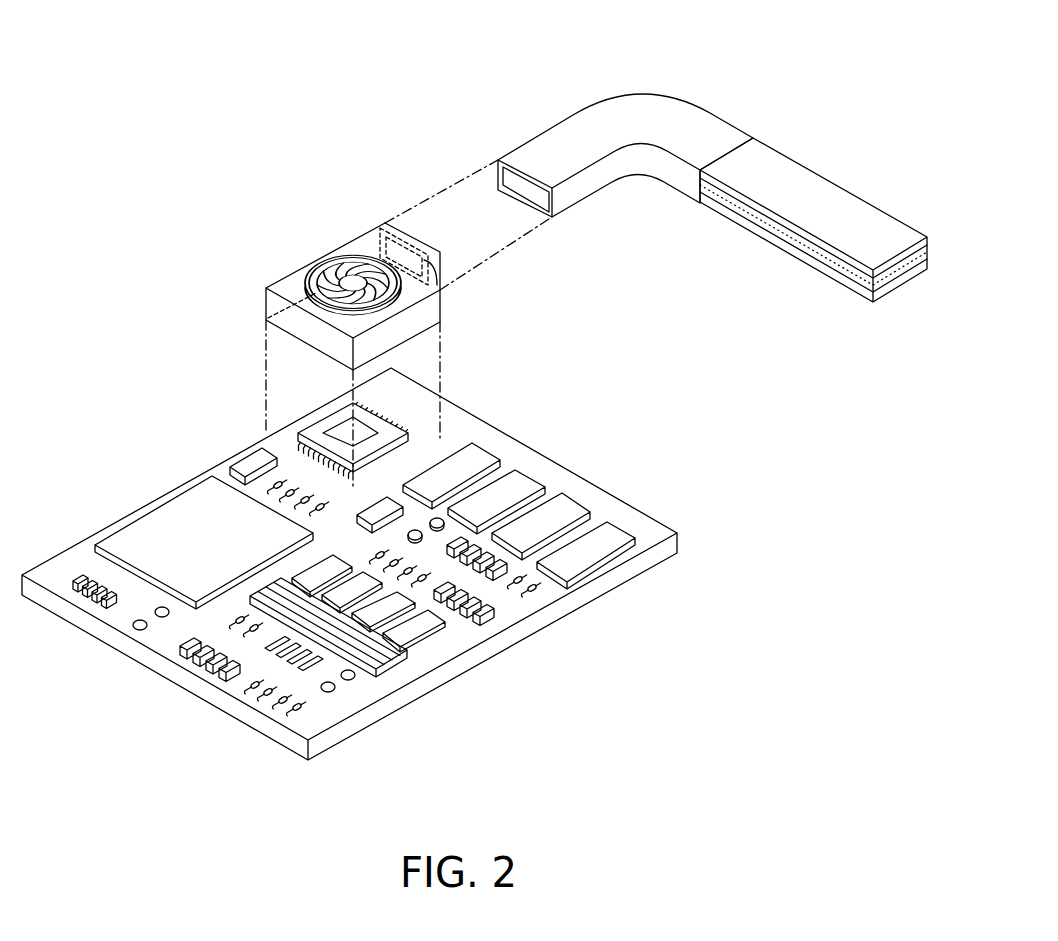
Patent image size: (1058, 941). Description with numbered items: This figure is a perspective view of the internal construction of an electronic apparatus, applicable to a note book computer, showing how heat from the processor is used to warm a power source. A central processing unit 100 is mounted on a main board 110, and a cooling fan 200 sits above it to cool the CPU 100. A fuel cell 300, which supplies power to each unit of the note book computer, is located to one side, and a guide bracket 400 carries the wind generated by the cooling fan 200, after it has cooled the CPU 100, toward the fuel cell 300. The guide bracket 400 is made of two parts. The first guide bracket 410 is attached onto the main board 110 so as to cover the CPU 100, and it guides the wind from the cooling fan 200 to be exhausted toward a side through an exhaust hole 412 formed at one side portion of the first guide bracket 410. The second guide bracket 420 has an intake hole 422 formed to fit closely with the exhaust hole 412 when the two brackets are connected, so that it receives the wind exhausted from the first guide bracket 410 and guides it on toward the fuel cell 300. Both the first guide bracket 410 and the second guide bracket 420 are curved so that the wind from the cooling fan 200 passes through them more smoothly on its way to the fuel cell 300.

The central processing unit (CPU) 100 is at (320, 428).
The main board 110 is at (640, 532).
The cooling fan 200 is at (330, 270).
The fuel cell 300 is at (838, 205).
The guide bracket 400 is at (555, 146).
The first guide bracket 410 is at (455, 188).
The exhaust hole 412 is at (407, 253).
The second guide bracket 420 is at (621, 174).
The intake hole 422 is at (520, 188).